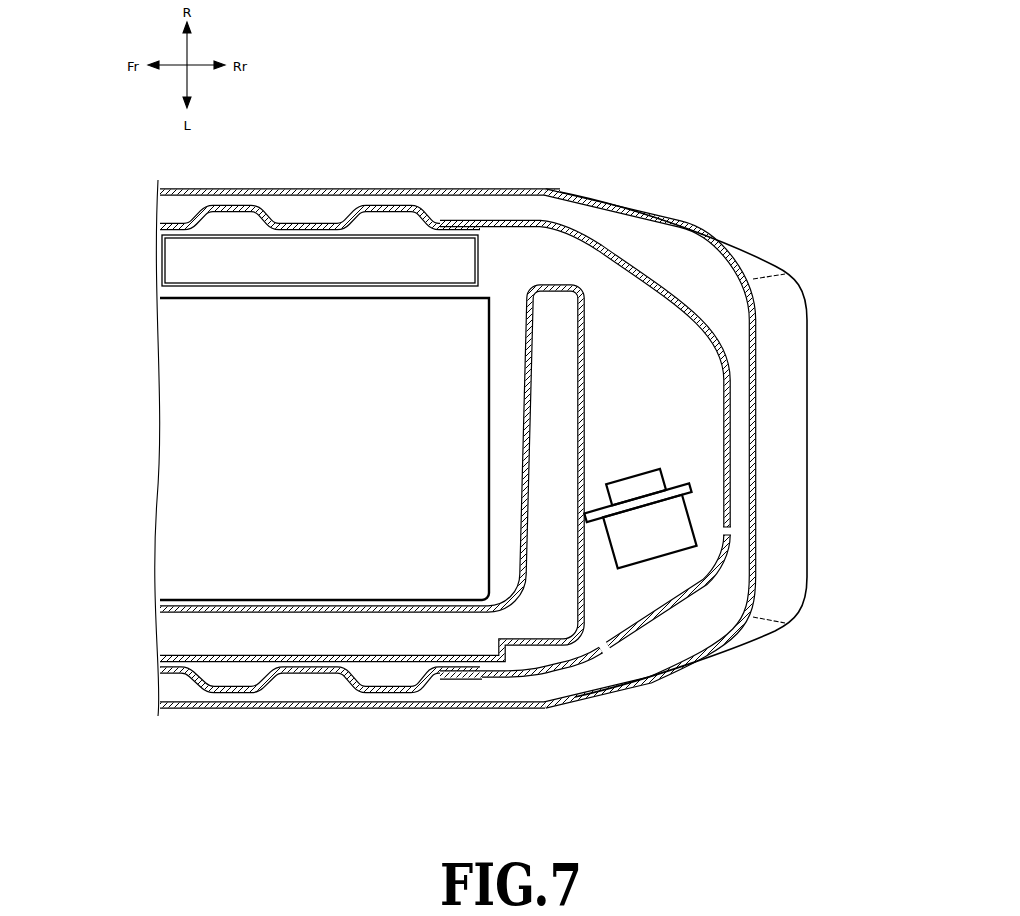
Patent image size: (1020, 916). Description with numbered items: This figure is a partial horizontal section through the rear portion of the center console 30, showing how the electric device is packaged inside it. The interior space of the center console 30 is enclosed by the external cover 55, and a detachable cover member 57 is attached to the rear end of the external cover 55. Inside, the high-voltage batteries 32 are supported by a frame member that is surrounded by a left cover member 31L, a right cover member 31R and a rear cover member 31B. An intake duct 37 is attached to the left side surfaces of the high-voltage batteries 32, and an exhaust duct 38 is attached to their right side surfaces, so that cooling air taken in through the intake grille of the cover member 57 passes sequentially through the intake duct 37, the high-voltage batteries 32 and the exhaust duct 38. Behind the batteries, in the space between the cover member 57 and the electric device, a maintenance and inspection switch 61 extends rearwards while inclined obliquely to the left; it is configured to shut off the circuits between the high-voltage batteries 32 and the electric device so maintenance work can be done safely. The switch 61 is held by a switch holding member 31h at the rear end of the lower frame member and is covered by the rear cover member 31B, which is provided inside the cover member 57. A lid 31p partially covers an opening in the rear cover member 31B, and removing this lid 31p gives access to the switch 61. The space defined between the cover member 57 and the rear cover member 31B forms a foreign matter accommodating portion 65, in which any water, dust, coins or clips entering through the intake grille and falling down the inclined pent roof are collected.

The center console 30 is at (547, 150).
The right cover member 31R is at (307, 226).
The left cover member 31L is at (304, 671).
The rear cover member 31B is at (637, 270).
The switch holding member 31h is at (678, 482).
The lid 31p is at (687, 595).
The high-voltage batteries 32 is at (187, 455).
The intake duct 37 is at (187, 633).
The exhaust duct 38 is at (187, 262).
The external cover 55 is at (188, 708).
The cover member 57 is at (782, 557).
The maintenance and inspection switch 61 is at (673, 527).
The foreign matter accommodating portion 65 is at (740, 478).